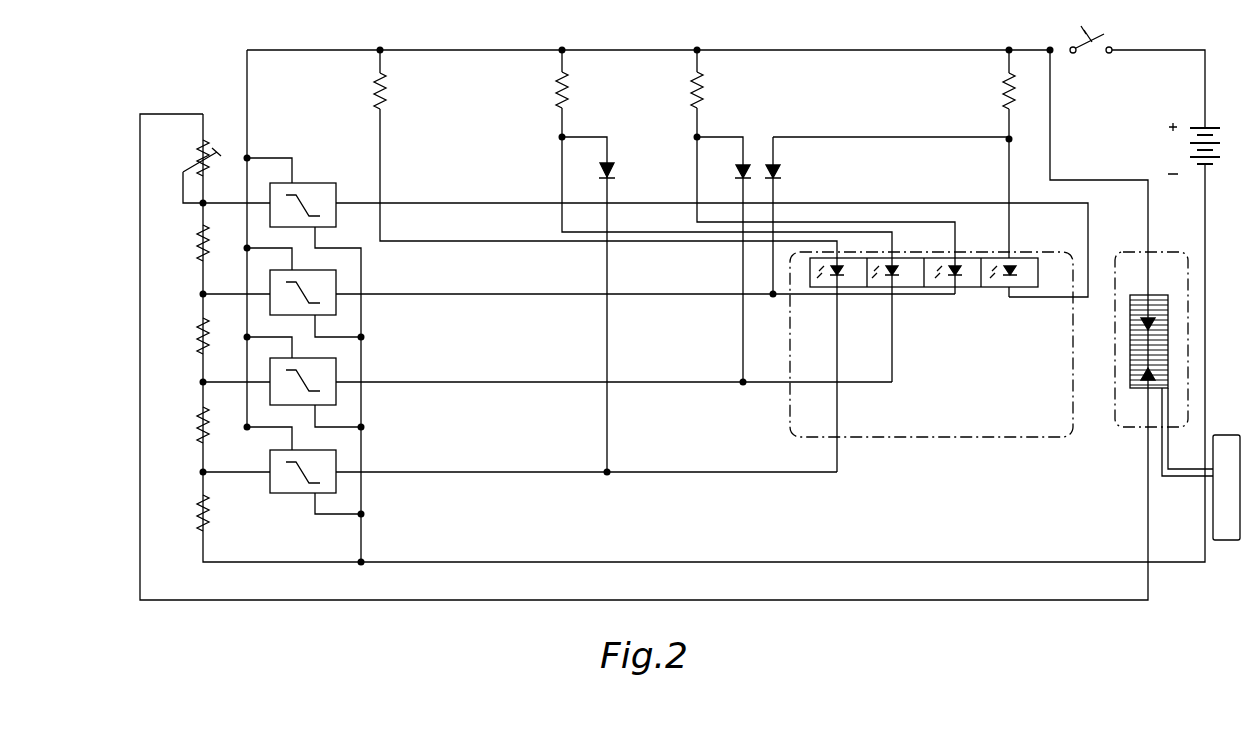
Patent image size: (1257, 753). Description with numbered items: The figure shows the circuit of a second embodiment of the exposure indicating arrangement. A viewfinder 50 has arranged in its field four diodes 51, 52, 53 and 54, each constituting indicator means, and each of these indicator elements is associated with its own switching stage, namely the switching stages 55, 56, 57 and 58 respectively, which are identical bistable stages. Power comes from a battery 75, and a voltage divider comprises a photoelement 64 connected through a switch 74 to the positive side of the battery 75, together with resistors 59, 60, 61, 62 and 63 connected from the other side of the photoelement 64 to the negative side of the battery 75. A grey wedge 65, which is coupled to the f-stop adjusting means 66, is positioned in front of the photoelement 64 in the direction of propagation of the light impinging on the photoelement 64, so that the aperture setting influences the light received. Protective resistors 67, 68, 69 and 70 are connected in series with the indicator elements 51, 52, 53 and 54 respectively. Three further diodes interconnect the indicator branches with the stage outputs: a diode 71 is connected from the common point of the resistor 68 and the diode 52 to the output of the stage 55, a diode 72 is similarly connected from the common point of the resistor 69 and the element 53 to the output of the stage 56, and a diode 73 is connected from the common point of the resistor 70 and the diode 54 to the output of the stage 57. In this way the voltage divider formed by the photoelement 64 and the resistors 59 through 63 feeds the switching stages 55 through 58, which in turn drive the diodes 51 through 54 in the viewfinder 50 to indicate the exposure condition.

The viewfinder 50 is at (948, 439).
The diode 51 is at (840, 278).
The diode 52 is at (895, 278).
The diode 53 is at (958, 278).
The diode 54 is at (1013, 278).
The switching stage 55 is at (286, 495).
The switching stage 56 is at (333, 400).
The switching stage 57 is at (333, 305).
The switching stage 58 is at (328, 187).
The resistor 59 is at (200, 160).
The resistor 60 is at (200, 244).
The resistor 61 is at (200, 336).
The resistor 62 is at (200, 430).
The resistor 63 is at (200, 526).
The photoelement 64 is at (1168, 360).
The grey wedge 65 is at (1164, 326).
The f-stop adjusting means 66 is at (1224, 540).
The protective resistor 67 is at (386, 102).
The protective resistor 68 is at (556, 102).
The protective resistor 69 is at (692, 102).
The protective resistor 70 is at (994, 102).
The diode 71 is at (600, 162).
The diode 72 is at (736, 162).
The diode 73 is at (780, 174).
The switch 74 is at (1110, 42).
The battery 75 is at (1183, 154).